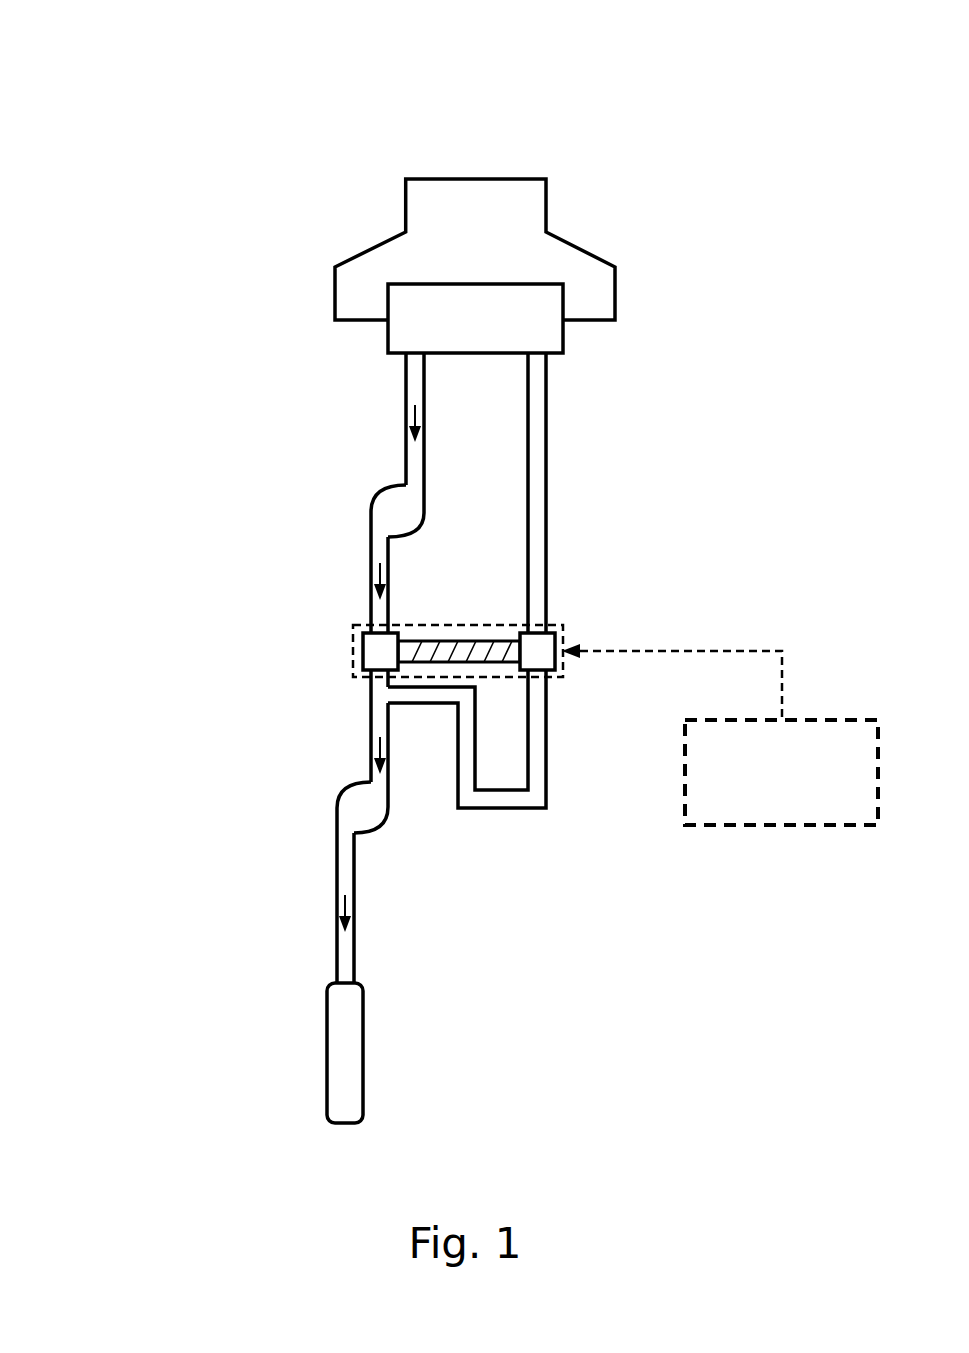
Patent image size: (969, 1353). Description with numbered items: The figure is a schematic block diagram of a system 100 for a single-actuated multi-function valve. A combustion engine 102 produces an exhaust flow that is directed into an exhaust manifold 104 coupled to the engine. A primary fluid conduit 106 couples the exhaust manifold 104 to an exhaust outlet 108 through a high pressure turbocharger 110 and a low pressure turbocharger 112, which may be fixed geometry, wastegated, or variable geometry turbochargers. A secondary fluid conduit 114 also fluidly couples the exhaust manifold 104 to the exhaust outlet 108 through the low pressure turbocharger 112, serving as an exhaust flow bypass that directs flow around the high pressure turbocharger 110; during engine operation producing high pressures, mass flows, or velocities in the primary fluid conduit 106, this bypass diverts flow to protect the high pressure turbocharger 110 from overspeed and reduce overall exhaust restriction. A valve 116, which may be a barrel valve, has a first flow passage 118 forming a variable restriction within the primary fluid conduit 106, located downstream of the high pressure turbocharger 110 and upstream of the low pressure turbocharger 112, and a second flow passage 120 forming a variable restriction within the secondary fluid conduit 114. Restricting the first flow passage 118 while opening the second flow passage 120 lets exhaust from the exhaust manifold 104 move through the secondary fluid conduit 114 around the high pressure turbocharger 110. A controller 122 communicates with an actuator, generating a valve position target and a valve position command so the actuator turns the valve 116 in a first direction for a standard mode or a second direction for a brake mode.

The system 100 is at (100, 72).
The combustion engine 102 is at (473, 178).
The exhaust manifold 104 is at (387, 343).
The primary fluid conduit 106 is at (405, 420).
The exhaust outlet 108 is at (326, 1033).
The high pressure turbocharger 110 is at (371, 500).
The low pressure turbocharger 112 is at (336, 797).
The secondary fluid conduit 114 is at (548, 468).
The valve 116 is at (468, 622).
The first flow passage 118 is at (362, 646).
The second flow passage 120 is at (566, 628).
The controller 122 is at (763, 798).